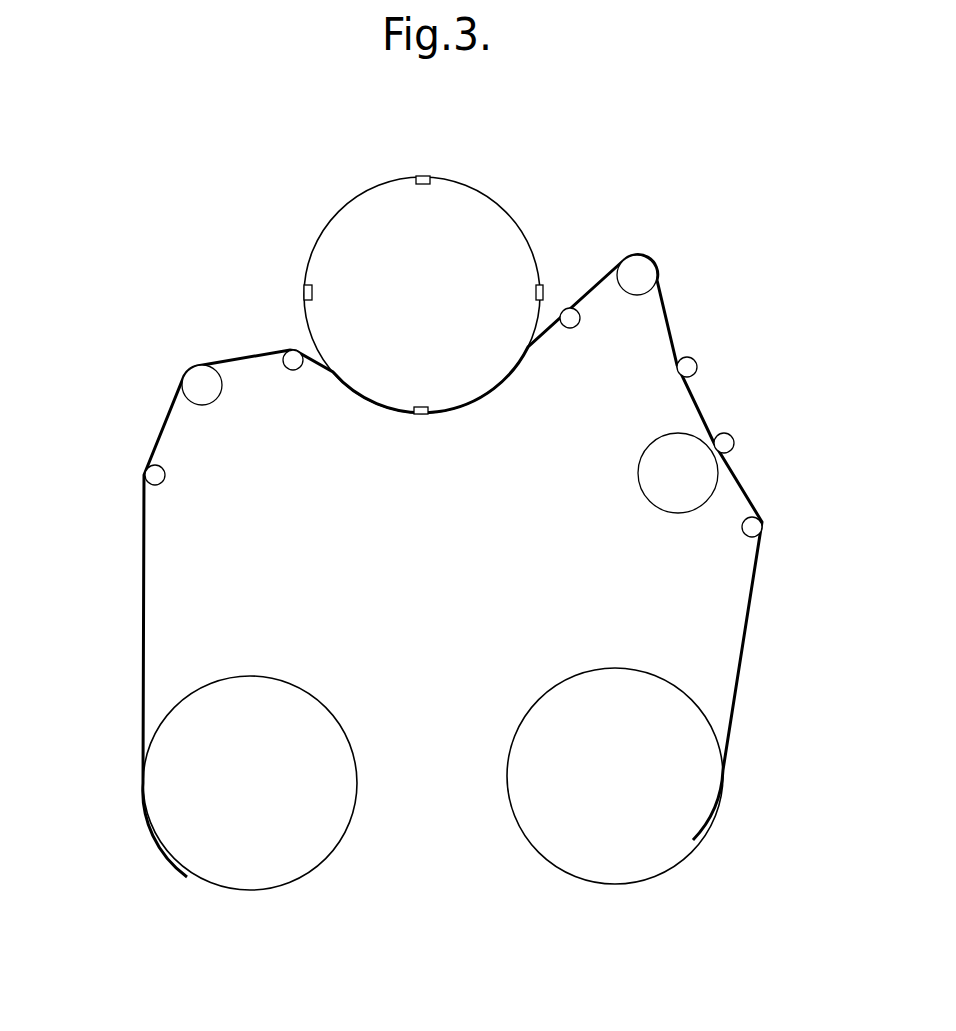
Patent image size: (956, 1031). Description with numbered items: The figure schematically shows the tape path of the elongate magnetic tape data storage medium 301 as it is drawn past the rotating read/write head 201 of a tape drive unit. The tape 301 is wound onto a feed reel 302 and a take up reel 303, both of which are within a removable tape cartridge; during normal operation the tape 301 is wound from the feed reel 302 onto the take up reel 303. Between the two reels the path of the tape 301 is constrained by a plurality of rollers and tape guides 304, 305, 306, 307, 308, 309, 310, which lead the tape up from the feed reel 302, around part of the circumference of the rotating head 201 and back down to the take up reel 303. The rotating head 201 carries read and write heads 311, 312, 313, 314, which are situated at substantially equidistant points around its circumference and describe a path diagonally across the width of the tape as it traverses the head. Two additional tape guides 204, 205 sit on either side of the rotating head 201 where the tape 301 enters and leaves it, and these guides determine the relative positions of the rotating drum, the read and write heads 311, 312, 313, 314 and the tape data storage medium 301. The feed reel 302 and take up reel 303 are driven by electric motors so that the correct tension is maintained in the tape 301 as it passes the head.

The rotating read/write head 201 is at (490, 200).
The tape guide 204 is at (294, 371).
The tape guide 205 is at (571, 329).
The magnetic tape data storage medium 301 is at (145, 580).
The feed reel 302 is at (292, 683).
The take up reel 303 is at (542, 858).
The roller/tape guide 304 is at (165, 475).
The roller/tape guide 305 is at (208, 404).
The roller/tape guide 306 is at (641, 256).
The roller/tape guide 307 is at (696, 362).
The roller/tape guide 308 is at (745, 537).
The roller/tape guide 309 is at (638, 470).
The roller/tape guide 310 is at (735, 441).
The read/write head 311 is at (424, 176).
The read/write head 312 is at (543, 292).
The read/write head 313 is at (420, 414).
The read/write head 314 is at (304, 292).